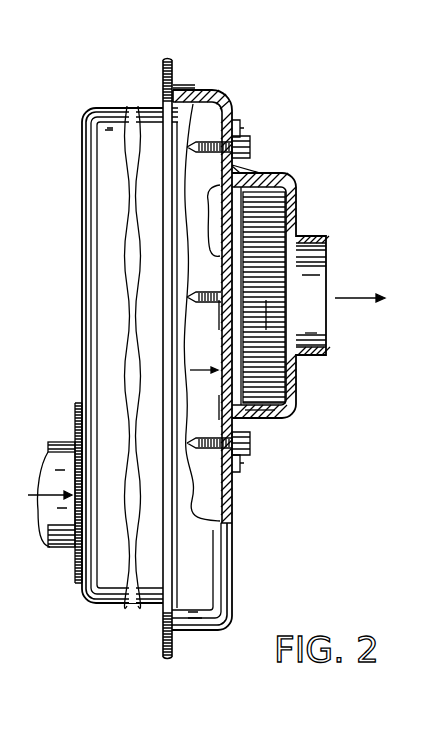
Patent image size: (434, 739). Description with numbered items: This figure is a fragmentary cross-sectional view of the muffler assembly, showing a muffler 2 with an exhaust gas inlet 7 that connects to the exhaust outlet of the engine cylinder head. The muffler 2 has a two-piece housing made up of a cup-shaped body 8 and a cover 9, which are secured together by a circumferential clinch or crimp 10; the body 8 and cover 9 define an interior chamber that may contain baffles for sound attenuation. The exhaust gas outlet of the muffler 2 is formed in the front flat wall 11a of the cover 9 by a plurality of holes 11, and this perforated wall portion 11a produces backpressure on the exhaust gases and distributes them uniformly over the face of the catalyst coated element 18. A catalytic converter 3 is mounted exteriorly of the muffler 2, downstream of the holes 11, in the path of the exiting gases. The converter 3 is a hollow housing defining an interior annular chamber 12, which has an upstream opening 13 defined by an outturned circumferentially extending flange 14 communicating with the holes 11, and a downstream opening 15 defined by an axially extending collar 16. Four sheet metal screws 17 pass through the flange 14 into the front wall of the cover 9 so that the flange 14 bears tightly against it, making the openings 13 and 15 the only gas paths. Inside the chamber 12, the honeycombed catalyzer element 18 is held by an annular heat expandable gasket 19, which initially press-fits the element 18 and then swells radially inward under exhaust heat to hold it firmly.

The muffler 2 is at (113, 90).
The catalytic converter 3 is at (346, 224).
The exhaust gas inlet 7 is at (57, 570).
The cup-shaped body 8 is at (100, 612).
The cover 9 is at (215, 635).
The circumferential clinch or crimp 10 is at (172, 62).
The holes 11 is at (222, 250).
The front flat wall 11a is at (222, 322).
The interior annular chamber 12 is at (312, 252).
The upstream opening 13 is at (262, 215).
The outturned circumferentially extending flange 14 is at (240, 124).
The downstream opening 15 is at (326, 352).
The axially extending collar 16 is at (318, 360).
The sheet metal screws 17 is at (252, 150).
The catalyzer element 18 is at (270, 330).
The annular heat expandable gasket 19 is at (275, 418).